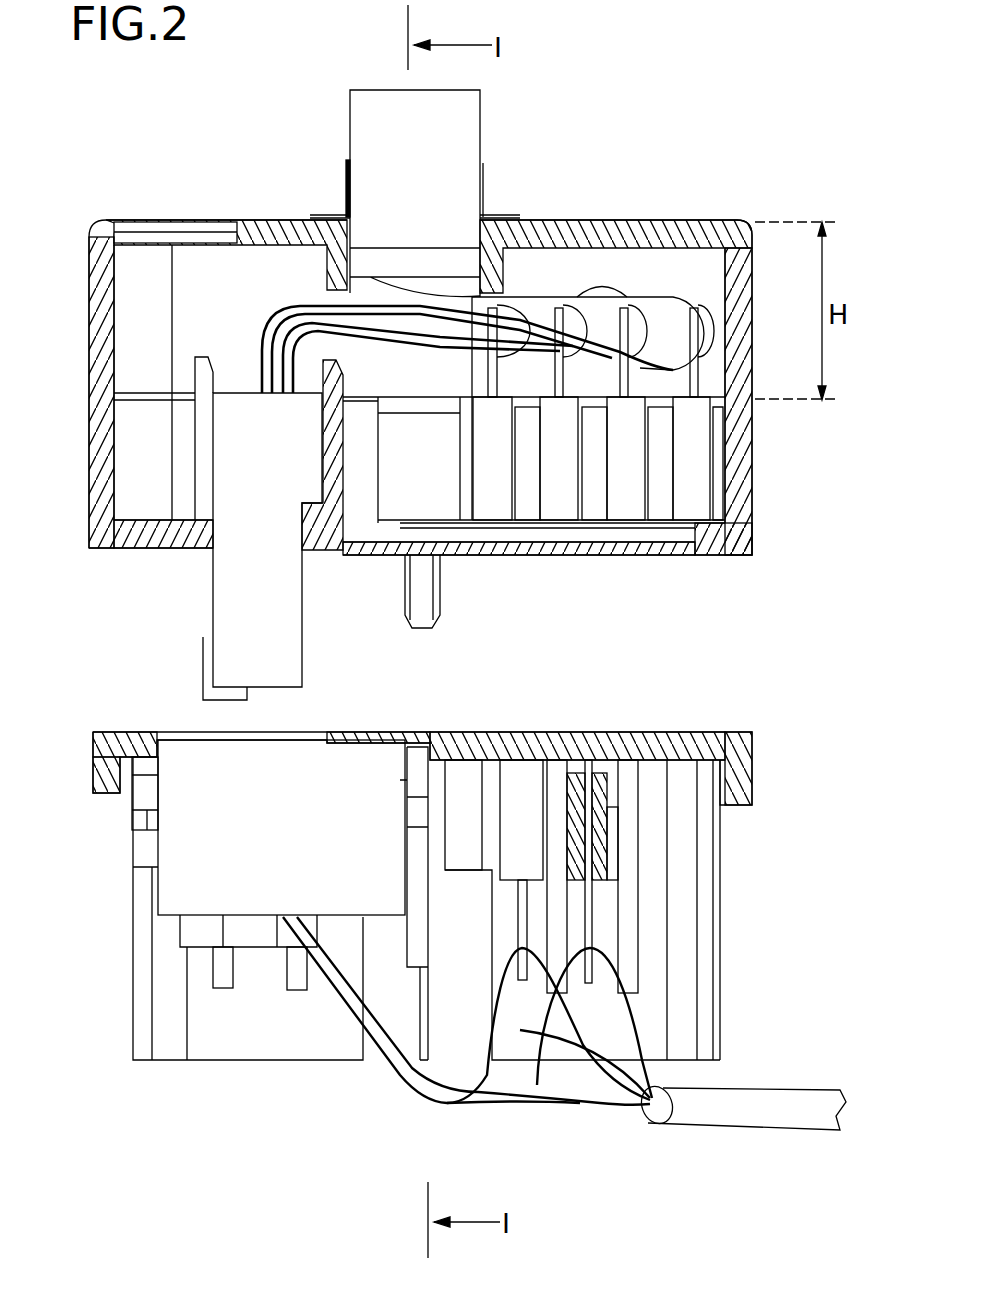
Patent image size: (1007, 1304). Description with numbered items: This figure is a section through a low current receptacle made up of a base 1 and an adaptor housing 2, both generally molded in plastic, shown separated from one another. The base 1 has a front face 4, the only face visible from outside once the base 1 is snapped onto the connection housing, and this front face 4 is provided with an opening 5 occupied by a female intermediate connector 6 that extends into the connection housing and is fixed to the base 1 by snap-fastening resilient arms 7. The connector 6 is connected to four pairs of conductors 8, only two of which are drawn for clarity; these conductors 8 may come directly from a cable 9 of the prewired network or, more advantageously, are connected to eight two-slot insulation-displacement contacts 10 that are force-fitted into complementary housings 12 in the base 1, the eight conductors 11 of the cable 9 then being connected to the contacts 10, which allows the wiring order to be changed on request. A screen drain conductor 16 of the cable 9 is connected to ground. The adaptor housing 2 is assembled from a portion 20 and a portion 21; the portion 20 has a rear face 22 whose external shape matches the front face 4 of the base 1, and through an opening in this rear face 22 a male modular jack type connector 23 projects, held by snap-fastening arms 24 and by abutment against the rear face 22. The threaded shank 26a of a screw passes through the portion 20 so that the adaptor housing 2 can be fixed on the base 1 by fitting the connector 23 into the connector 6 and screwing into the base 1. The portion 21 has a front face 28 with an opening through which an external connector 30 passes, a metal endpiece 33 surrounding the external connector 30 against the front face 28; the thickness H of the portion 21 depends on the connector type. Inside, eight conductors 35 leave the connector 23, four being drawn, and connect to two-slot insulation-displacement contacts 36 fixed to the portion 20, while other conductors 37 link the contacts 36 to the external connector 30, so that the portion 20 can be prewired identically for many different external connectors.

The base 1 is at (710, 700).
The adaptor housing 2 is at (776, 545).
The front face 4 is at (475, 735).
The opening 5 is at (185, 735).
The intermediate connector 6 is at (193, 878).
The resilient arms 7 is at (225, 988).
The conductors 8 is at (410, 1060).
The cable 9 is at (758, 1120).
The two-slot insulation-displacement contacts 10 is at (600, 943).
The conductors 11 is at (635, 1063).
The housings 12 is at (610, 853).
The screen drain conductor 16 is at (577, 1105).
The portion 20 is at (420, 378).
The portion 21 is at (102, 305).
The rear face 22 is at (137, 548).
The modular jack type connector 23 is at (230, 583).
The snap-fastening arms 24 is at (338, 460).
The threaded shank 26a is at (430, 603).
The front face 28 is at (655, 220).
The external connector 30 is at (462, 128).
The metal endpiece 33 is at (515, 212).
The conductors 35 is at (287, 318).
The two-slot insulation-displacement contacts 36 is at (690, 373).
The conductors 37 is at (688, 300).